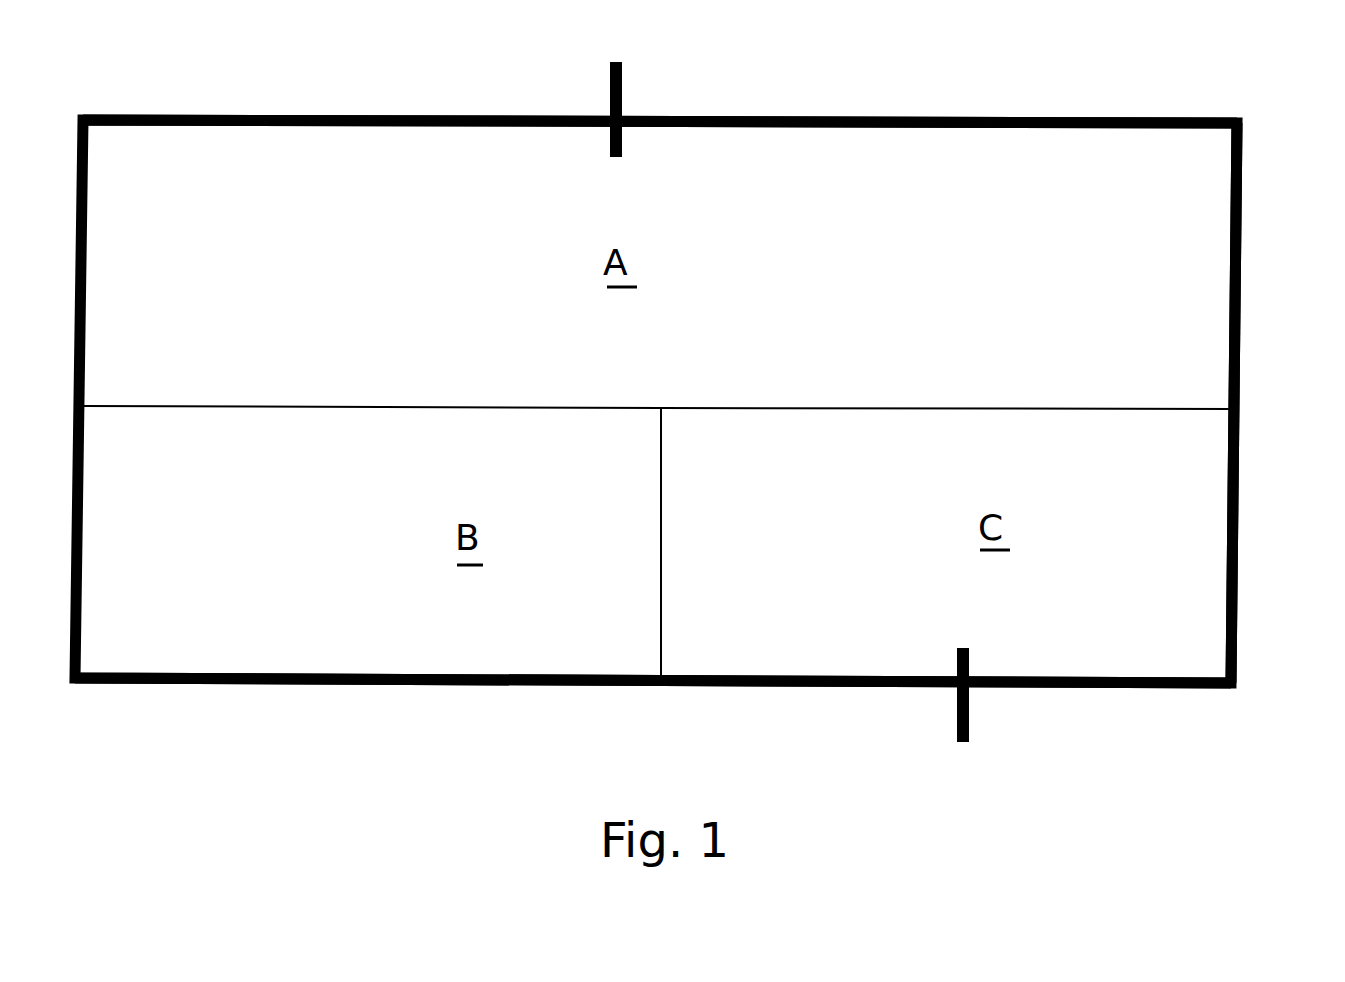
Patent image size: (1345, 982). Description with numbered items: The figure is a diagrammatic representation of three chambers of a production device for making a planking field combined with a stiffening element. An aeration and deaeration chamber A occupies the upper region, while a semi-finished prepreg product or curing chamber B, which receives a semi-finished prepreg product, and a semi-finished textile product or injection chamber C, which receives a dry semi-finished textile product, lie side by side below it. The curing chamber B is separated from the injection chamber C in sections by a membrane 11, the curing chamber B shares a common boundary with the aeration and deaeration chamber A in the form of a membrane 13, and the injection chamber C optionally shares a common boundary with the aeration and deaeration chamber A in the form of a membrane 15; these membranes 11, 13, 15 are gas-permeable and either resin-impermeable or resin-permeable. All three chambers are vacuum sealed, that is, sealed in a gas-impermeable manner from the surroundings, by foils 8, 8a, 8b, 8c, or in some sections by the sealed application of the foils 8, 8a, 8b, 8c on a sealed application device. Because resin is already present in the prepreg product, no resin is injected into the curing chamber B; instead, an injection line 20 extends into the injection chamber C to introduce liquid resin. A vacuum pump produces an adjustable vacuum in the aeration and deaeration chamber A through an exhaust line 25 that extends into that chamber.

The foil 8 is at (1242, 265).
The foil 8a is at (1060, 118).
The foil 8b is at (470, 687).
The foil 8c is at (1240, 478).
The membrane 11 is at (661, 487).
The membrane 13 is at (228, 406).
The membrane 15 is at (743, 408).
The injection line 20 is at (970, 725).
The exhaust line 25 is at (622, 93).